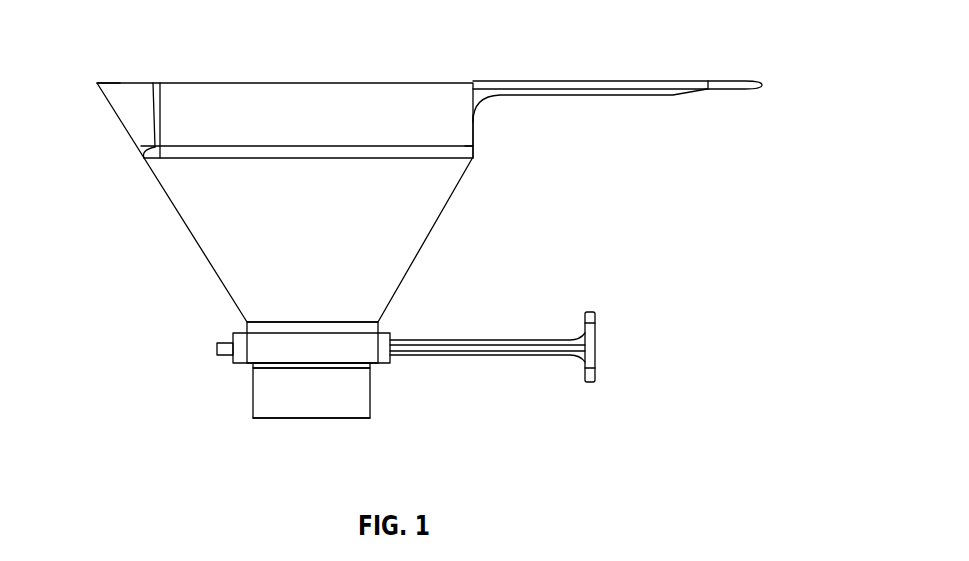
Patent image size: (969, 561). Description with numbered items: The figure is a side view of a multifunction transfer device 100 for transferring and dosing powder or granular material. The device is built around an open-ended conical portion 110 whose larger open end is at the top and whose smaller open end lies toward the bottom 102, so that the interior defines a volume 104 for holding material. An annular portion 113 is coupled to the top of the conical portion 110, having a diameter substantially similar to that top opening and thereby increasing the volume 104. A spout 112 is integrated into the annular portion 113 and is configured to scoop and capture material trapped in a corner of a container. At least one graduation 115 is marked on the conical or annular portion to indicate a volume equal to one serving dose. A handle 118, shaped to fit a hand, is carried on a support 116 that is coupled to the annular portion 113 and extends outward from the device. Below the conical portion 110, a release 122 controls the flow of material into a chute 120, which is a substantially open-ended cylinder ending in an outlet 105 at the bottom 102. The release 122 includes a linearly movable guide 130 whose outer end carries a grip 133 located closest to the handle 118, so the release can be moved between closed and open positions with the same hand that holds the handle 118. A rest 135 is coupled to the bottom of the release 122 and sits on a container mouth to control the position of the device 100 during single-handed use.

The multifunction transfer device 100 is at (407, 165).
The bottom 102 is at (292, 389).
The volume 104 is at (233, 76).
The outlet 105 is at (337, 425).
The conical portion 110 is at (433, 222).
The spout 112 is at (120, 82).
The annular portion 113 is at (473, 130).
The graduation 115 is at (473, 150).
The support 116 is at (573, 97).
The handle 118 is at (620, 77).
The chute 120 is at (260, 403).
The release 122 is at (263, 347).
The guide 130 is at (532, 364).
The grip 133 is at (598, 345).
The rest 135 is at (255, 365).